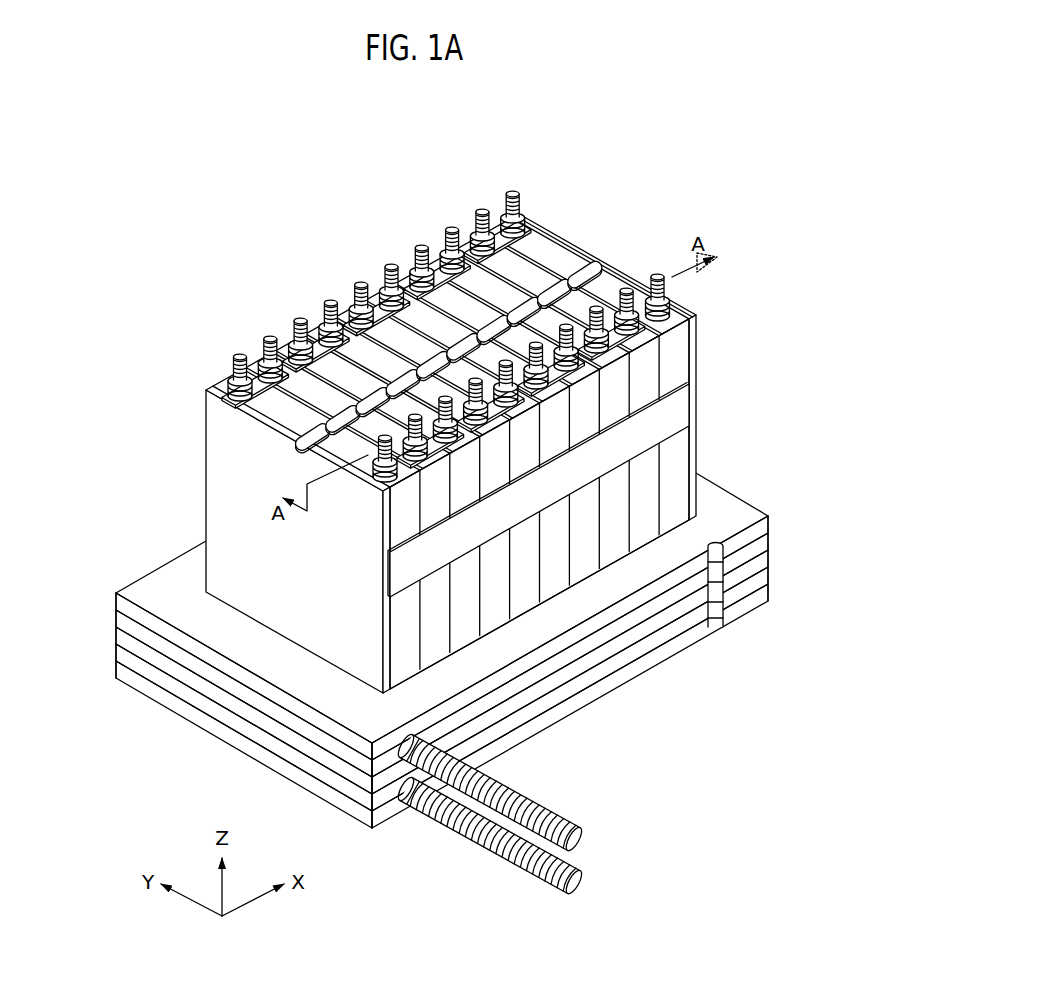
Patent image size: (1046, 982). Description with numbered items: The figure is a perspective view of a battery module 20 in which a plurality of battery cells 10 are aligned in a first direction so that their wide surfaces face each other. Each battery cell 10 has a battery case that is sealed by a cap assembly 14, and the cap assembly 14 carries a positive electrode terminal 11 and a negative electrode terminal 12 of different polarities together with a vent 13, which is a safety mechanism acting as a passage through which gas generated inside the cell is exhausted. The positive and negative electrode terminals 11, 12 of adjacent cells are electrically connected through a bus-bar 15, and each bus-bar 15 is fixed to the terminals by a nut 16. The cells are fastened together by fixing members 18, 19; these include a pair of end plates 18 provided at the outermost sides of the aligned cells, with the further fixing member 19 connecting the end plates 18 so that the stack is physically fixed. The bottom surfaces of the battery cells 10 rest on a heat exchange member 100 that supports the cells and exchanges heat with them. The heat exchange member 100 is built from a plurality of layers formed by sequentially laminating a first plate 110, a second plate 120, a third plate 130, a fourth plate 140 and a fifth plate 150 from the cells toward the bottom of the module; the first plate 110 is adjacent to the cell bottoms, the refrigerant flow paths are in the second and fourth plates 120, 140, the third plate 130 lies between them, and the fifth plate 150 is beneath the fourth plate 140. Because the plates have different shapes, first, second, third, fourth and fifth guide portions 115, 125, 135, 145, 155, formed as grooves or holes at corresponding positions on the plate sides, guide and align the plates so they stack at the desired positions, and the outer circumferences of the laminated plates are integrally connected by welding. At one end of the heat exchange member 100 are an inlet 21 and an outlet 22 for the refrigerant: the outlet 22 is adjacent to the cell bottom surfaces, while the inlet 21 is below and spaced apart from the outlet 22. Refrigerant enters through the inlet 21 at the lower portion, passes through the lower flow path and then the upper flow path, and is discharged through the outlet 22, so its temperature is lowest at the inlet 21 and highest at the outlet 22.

The battery cell 10 is at (622, 524).
The positive electrode terminal 11 is at (516, 192).
The negative electrode terminal 12 is at (659, 275).
The vent 13 is at (588, 269).
The cap assembly 14 is at (617, 290).
The bus-bar 15 is at (258, 366).
The nut 16 is at (232, 388).
The end plate 18 is at (214, 489).
The fixing member 19 is at (676, 417).
The battery module 20 is at (486, 395).
The inlet 21 is at (527, 860).
The outlet 22 is at (546, 816).
The heat exchange member 100 is at (441, 690).
The first plate 110 is at (118, 601).
The first guide portion 115 is at (738, 546).
The second plate 120 is at (118, 618).
The second guide portion 125 is at (738, 563).
The third plate 130 is at (118, 635).
The third guide portion 135 is at (738, 580).
The fourth plate 140 is at (118, 652).
The fourth guide portion 145 is at (738, 597).
The fifth plate 150 is at (118, 669).
The fifth guide portion 155 is at (738, 614).